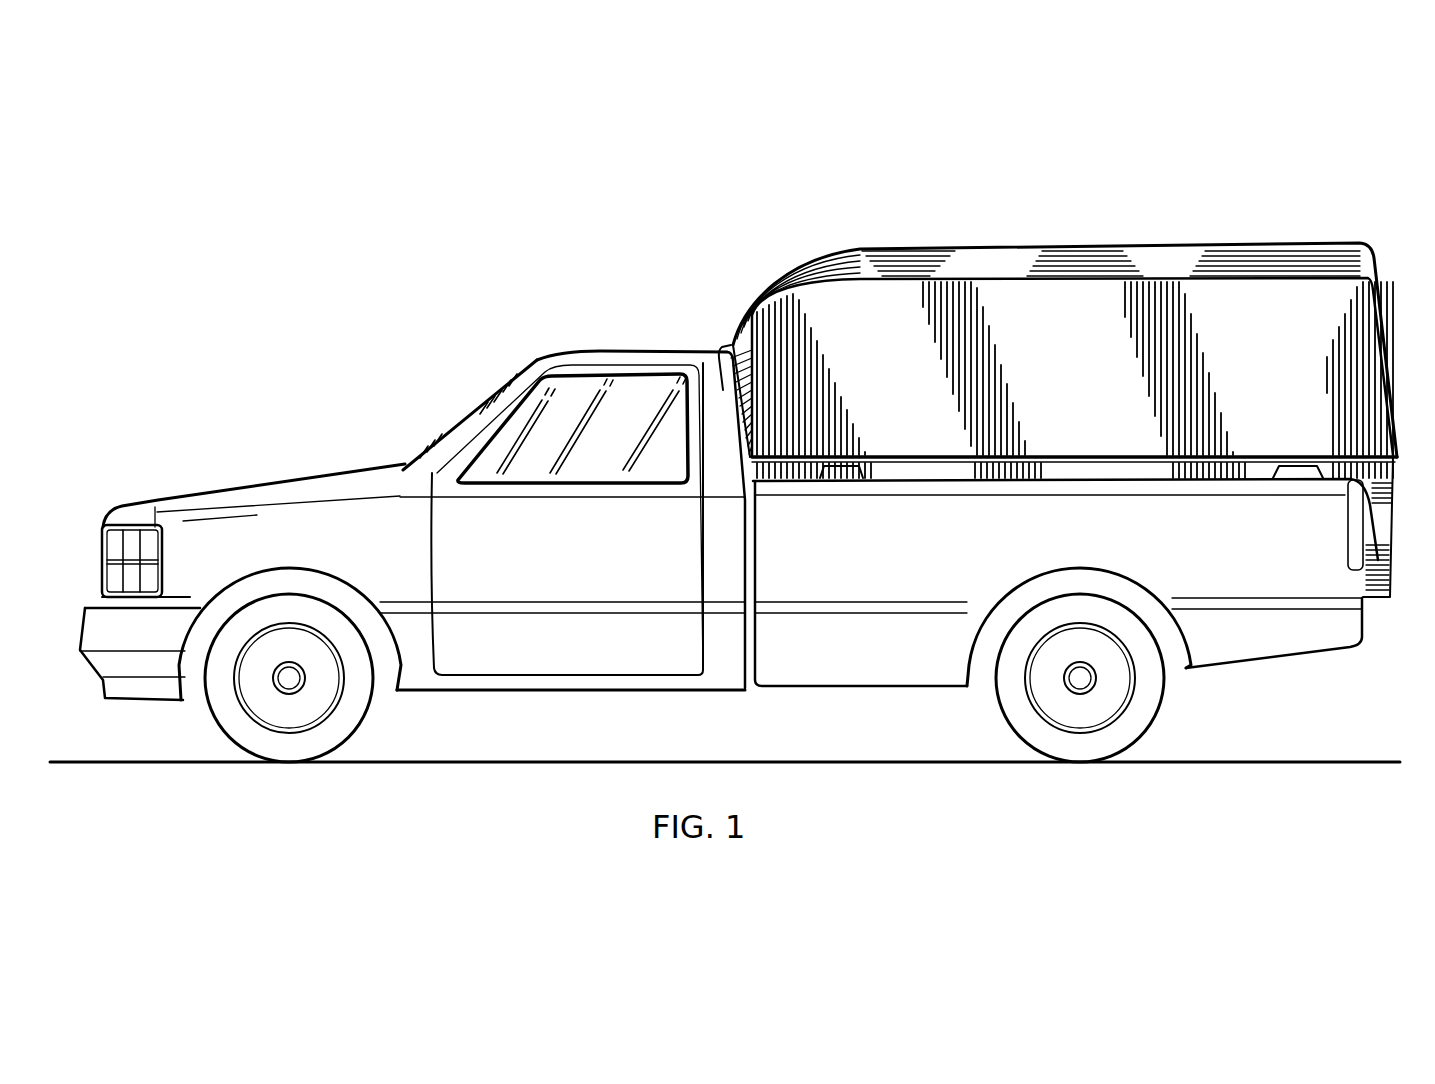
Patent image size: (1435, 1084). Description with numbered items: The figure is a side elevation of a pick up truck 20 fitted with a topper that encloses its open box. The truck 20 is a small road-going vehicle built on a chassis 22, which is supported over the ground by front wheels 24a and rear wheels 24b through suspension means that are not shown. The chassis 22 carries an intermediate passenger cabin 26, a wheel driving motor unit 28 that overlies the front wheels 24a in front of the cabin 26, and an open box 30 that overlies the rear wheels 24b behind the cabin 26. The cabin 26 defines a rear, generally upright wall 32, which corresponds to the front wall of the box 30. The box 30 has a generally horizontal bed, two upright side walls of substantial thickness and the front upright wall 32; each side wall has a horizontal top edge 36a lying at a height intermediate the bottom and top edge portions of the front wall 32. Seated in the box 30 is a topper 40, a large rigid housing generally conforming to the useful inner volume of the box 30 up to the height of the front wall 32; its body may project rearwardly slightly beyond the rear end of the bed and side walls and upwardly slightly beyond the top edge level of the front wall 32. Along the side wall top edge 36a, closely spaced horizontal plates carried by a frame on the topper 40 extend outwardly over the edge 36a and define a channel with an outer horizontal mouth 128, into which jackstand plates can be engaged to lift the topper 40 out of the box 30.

The pick up truck 20 is at (732, 670).
The chassis 22 is at (852, 690).
The front wheels 24a is at (353, 720).
The rear wheels 24b is at (1142, 710).
The passenger cabin 26 is at (613, 365).
The wheel driving motor unit 28 is at (223, 488).
The box 30 is at (1307, 553).
The rear upright wall 32 is at (733, 387).
The side wall top edge 36a is at (1172, 481).
The topper unit 40 is at (1052, 297).
The outer horizontal mouth 128 is at (858, 478).